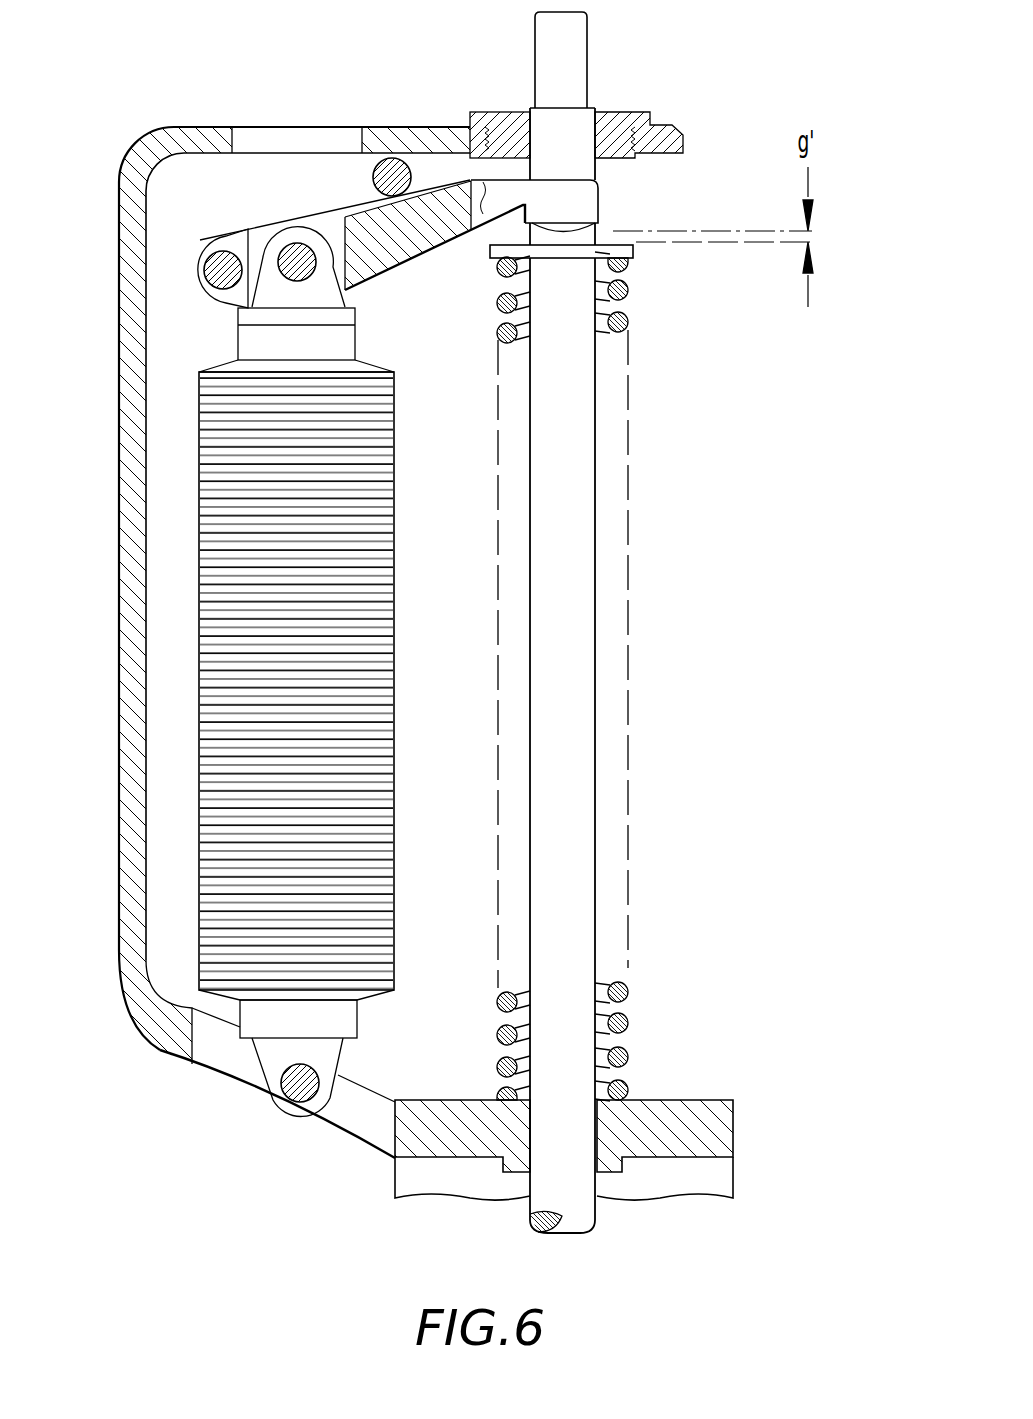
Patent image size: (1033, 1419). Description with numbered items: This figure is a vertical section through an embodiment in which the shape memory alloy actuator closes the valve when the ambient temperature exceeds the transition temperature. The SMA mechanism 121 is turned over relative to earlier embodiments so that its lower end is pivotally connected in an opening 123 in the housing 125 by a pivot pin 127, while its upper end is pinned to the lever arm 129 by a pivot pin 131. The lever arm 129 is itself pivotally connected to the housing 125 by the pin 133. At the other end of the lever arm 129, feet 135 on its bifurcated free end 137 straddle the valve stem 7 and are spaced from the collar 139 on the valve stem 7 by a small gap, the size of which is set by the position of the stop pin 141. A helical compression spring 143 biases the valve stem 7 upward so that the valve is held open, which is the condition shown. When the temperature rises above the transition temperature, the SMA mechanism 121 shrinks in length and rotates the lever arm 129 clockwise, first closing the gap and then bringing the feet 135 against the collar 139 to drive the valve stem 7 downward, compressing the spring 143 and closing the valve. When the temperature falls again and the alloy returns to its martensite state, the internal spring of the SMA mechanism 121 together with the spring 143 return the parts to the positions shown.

The valve stem 7 is at (583, 843).
The SMA mechanism 121 is at (185, 529).
The opening 123 is at (210, 1037).
The housing 125 is at (130, 785).
The pivot pin 127 is at (292, 1100).
The lever arm 129 is at (314, 214).
The pivot pin 131 is at (293, 246).
The pin 133 is at (212, 276).
The feet 135 is at (563, 227).
The bifurcated free end 137 is at (600, 200).
The collar 139 is at (492, 251).
The stop pin 141 is at (400, 174).
The helical compression spring 143 is at (630, 1058).